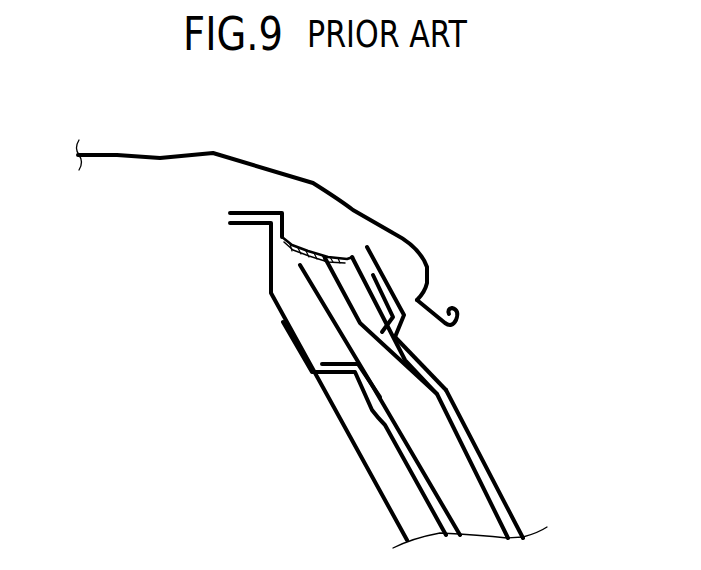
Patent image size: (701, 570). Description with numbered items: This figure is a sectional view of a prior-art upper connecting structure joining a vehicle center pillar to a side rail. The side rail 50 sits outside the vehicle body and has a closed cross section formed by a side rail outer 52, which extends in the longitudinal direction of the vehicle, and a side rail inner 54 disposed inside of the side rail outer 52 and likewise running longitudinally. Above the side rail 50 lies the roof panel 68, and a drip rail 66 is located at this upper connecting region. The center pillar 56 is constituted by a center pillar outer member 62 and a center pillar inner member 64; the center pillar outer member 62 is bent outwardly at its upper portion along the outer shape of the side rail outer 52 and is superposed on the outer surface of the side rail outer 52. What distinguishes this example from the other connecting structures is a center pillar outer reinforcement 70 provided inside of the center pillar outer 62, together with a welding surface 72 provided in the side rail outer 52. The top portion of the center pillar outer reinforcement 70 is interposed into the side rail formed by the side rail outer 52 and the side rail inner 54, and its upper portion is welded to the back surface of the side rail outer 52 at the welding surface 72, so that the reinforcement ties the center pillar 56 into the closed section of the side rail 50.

The side rail 50 is at (257, 266).
The side rail outer 52 is at (363, 235).
The side rail inner 54 is at (280, 312).
The center pillar 56 is at (512, 432).
The center pillar outer member 62 is at (510, 488).
The center pillar inner member 64 is at (388, 507).
The drip rail 66 is at (447, 330).
The roof panel 68 is at (153, 155).
The center pillar outer reinforcement 70 is at (442, 393).
The welding surface 72 is at (318, 250).